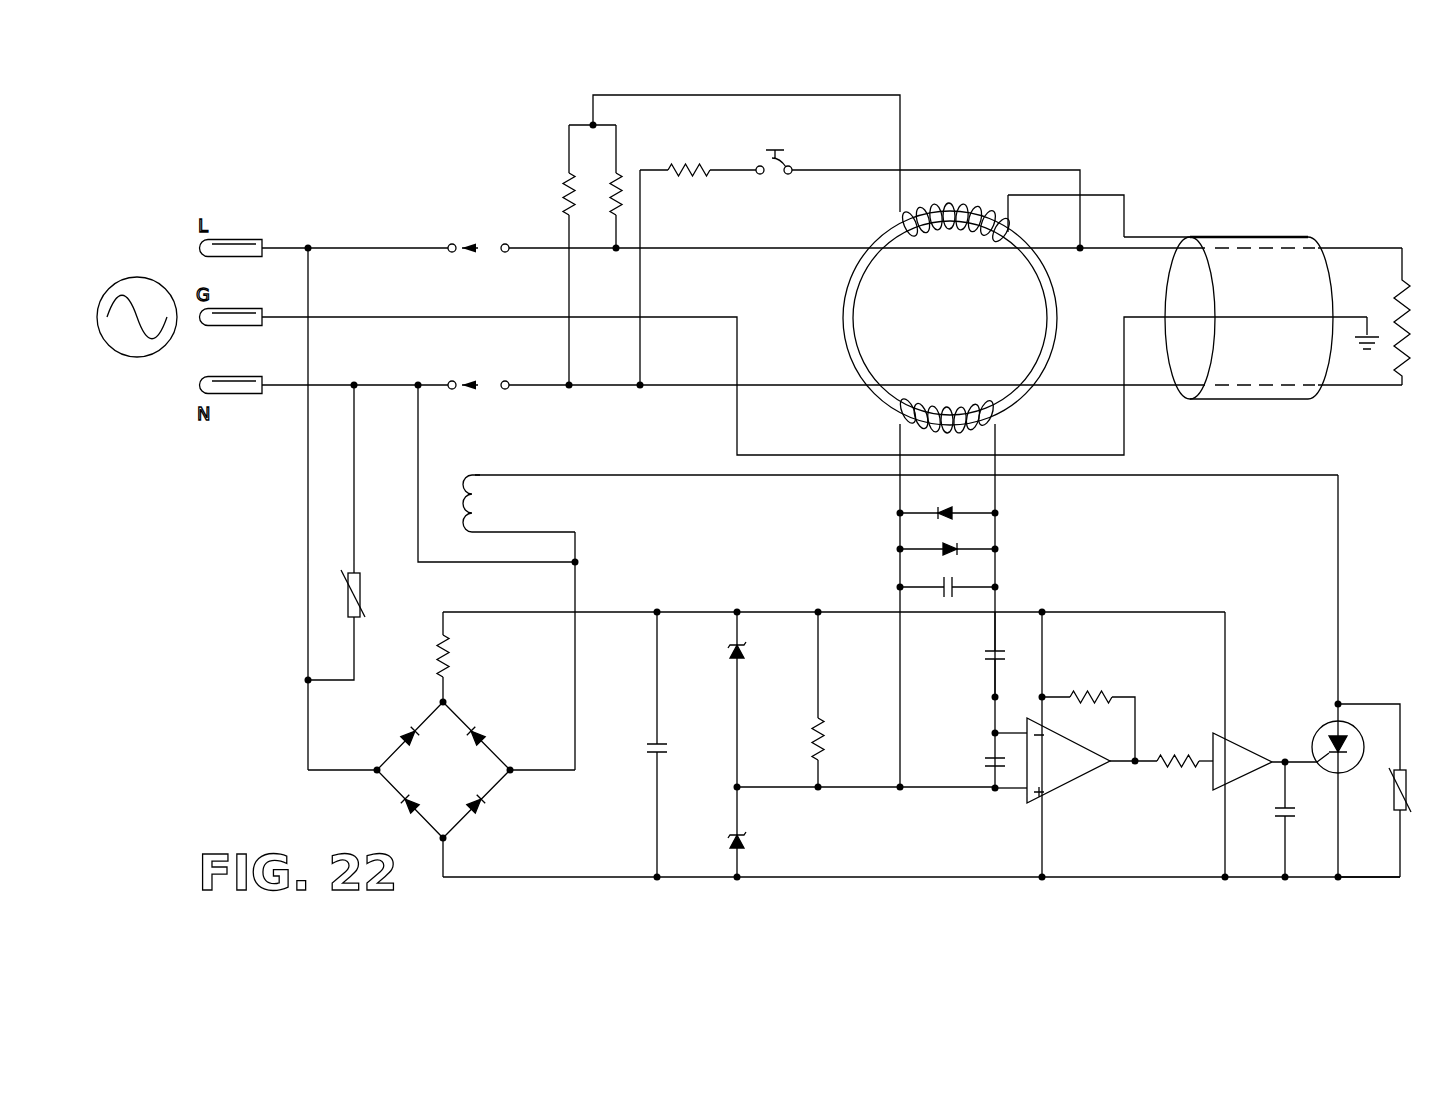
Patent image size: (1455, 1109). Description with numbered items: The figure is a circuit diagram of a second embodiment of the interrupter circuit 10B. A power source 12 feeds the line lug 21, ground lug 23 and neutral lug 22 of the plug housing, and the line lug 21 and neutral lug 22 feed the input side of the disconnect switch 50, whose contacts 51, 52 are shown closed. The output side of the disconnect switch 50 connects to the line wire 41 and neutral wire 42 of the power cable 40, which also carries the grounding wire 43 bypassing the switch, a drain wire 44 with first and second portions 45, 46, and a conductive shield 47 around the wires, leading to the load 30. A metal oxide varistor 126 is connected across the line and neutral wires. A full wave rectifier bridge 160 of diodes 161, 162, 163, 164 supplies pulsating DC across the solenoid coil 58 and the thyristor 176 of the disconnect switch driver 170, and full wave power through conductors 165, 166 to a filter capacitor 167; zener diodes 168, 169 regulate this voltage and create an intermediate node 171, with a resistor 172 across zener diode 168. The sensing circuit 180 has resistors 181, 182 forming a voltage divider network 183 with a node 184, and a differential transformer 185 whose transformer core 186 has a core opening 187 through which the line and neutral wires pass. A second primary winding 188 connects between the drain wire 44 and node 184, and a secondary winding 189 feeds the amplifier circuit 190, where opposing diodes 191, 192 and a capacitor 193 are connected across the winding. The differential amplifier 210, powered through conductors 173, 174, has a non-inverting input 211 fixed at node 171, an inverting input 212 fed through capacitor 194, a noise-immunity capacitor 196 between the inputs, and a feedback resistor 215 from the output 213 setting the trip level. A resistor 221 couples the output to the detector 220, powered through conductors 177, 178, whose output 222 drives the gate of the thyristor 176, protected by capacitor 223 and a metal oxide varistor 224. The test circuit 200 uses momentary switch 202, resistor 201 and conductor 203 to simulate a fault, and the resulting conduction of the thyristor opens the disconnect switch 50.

The circuit 10B is at (350, 157).
The power source 12 is at (130, 280).
The line lug 21 is at (243, 242).
The neutral lug 22 is at (253, 398).
The ground lug 23 is at (243, 311).
The load 30 is at (1400, 342).
The power cable 40 is at (1249, 302).
The line wire 41 is at (1138, 252).
The neutral wire 42 is at (1081, 388).
The grounding wire 43 is at (1064, 452).
The drain wire 44 is at (1130, 236).
The first portion 45 is at (1262, 236).
The second portion 46 is at (1114, 196).
The conductive shield 47 is at (1248, 404).
The disconnect switch 50 is at (476, 294).
The line contact 51 is at (510, 245).
The neutral contact 52 is at (508, 389).
The solenoid coil 58 is at (483, 506).
The metal oxide varistor 126 is at (362, 589).
The full wave rectifier bridge 160 is at (470, 740).
The diode 161 is at (482, 728).
The diode 162 is at (402, 810).
The diode 163 is at (484, 810).
The diode 164 is at (410, 730).
The conductor 165 is at (655, 611).
The conductor 166 is at (655, 878).
The filter capacitor 167 is at (642, 742).
The zener diode 168 is at (746, 645).
The zener diode 169 is at (746, 835).
The disconnect switch driver 170 is at (1346, 678).
The node 171 is at (730, 790).
The resistor 172 is at (822, 757).
The conductor 173 is at (1044, 662).
The conductor 174 is at (1037, 806).
The thyristor 176 is at (1322, 730).
The conductor 177 is at (1228, 652).
The conductor 178 is at (1222, 814).
The sensing circuit 180 is at (935, 256).
The resistor 181 is at (560, 192).
The resistor 182 is at (622, 178).
The voltage divider network 183 is at (677, 241).
The node 184 is at (598, 124).
The differential transformer 185 is at (838, 302).
The transformer core 186 is at (850, 355).
The core opening 187 is at (1013, 291).
The second primary winding 188 is at (942, 218).
The secondary winding 189 is at (947, 408).
The amplifier circuit 190 is at (1047, 682).
The diode 191 is at (962, 513).
The diode 192 is at (962, 550).
The capacitor 193 is at (960, 587).
The capacitor 194 is at (985, 653).
The capacitor 196 is at (985, 760).
The test circuit 200 is at (860, 244).
The resistor 201 is at (688, 196).
The momentary switch 202 is at (782, 180).
The conductor 203 is at (830, 170).
The differential amplifier 210 is at (1062, 790).
The non-inverting input 211 is at (988, 792).
The inverting input 212 is at (990, 732).
The output 213 is at (1118, 752).
The feedback resistor 215 is at (1088, 694).
The detector 220 is at (1212, 782).
The resistor 221 is at (1179, 750).
The output 222 is at (1283, 754).
The capacitor 223 is at (1280, 826).
The metal oxide varistor 224 is at (1395, 815).